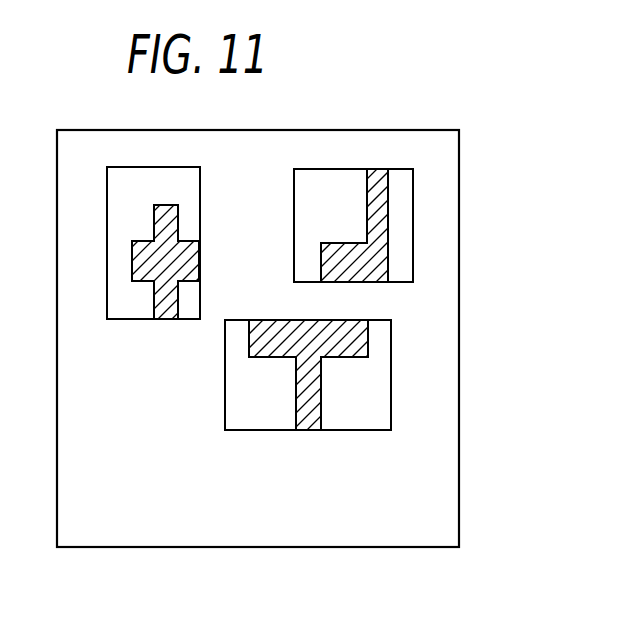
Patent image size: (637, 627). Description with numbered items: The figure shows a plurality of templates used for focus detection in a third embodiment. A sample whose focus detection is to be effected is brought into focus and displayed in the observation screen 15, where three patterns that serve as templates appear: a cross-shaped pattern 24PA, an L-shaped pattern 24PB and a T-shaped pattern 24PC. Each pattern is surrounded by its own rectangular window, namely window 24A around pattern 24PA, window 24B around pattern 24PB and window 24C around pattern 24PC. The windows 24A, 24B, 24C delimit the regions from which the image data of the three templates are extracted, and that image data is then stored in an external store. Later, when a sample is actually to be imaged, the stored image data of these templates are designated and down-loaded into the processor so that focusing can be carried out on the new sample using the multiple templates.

The observation screen 15 is at (148, 119).
The window W24A 24A is at (113, 320).
The pattern P24A 24PA is at (163, 320).
The window W24B 24B is at (294, 222).
The pattern P24B 24PB is at (376, 172).
The window W24C 24C is at (258, 430).
The pattern P24C 24PC is at (357, 328).